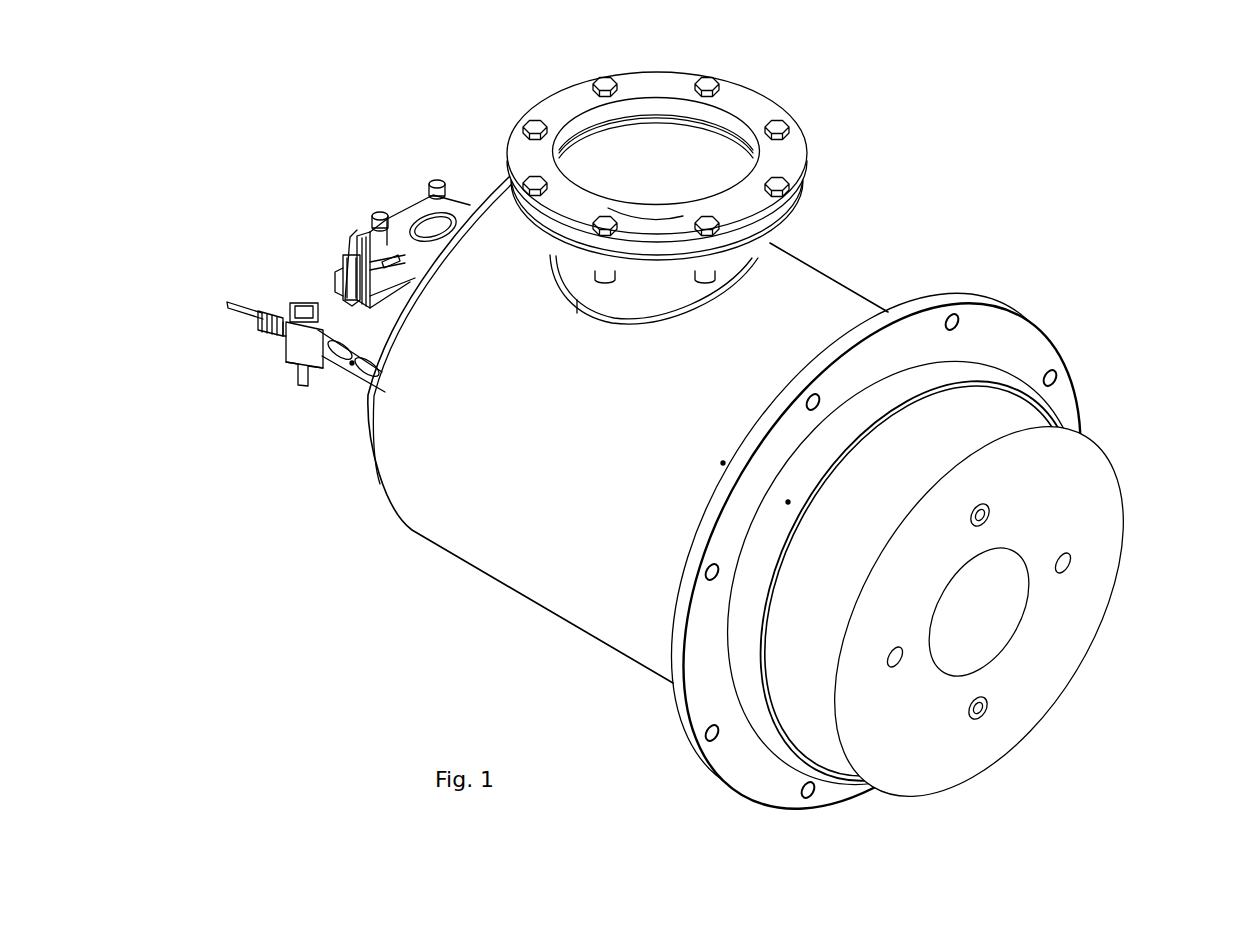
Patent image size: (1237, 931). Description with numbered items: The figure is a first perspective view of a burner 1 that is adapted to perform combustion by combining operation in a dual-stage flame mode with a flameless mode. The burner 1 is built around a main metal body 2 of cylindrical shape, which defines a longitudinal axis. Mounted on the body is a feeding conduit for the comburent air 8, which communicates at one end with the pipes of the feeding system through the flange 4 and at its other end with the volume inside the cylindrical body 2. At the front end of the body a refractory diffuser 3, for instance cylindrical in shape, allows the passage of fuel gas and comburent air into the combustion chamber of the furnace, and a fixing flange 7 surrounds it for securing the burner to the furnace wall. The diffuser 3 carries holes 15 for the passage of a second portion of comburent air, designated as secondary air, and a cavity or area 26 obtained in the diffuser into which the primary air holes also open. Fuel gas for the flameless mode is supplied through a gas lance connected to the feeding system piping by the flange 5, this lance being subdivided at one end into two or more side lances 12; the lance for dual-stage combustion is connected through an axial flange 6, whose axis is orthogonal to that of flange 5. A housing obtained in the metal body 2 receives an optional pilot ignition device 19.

The burner 1 is at (921, 186).
The main metal body 2 is at (492, 558).
The refractory diffuser 3 is at (1087, 468).
The flange 4 is at (560, 108).
The flange 5 is at (406, 213).
The axial flange 6 is at (348, 266).
The fixing flange 7 is at (1018, 343).
The feeding conduit for the comburent air 8 is at (690, 178).
The side lances 12 is at (988, 510).
The holes 15 is at (980, 525).
The pilot ignition device 19 is at (296, 340).
The cavity or area 26 is at (980, 613).